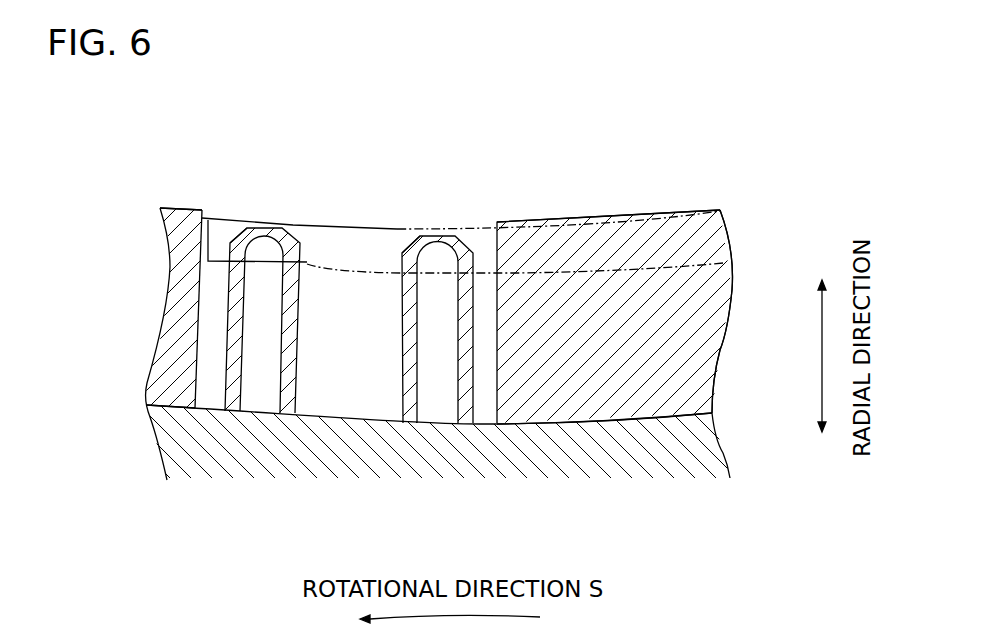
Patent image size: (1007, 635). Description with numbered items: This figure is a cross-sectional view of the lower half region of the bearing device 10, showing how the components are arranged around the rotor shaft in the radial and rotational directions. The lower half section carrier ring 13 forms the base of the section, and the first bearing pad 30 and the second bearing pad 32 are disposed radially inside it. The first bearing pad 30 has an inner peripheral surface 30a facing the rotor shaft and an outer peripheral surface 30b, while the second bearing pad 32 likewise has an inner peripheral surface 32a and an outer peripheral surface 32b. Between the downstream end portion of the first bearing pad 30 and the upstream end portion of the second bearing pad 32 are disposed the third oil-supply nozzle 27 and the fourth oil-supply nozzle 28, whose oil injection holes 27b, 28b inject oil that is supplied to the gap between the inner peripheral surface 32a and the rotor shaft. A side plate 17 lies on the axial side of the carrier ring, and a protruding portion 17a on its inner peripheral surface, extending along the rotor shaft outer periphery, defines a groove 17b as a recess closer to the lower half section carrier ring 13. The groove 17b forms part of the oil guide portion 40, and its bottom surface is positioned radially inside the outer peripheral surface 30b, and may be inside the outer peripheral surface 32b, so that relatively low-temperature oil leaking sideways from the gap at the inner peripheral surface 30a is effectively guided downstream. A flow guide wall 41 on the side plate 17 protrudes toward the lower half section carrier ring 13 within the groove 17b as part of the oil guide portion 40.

The bearing device 10 is at (768, 197).
The lower half section carrier ring 13 is at (335, 460).
The side plate 17 is at (657, 243).
The protruding portion 17a is at (693, 211).
The groove 17b is at (737, 247).
The third oil-supply nozzle 27 is at (438, 234).
The oil injection hole 27b is at (406, 235).
The fourth oil-supply nozzle 28 is at (270, 226).
The oil injection hole 28b is at (234, 228).
The first bearing pad 30 is at (593, 238).
The inner peripheral surface of the first bearing pad 30a is at (557, 221).
The outer peripheral surface of the first bearing pad 30b is at (605, 457).
The second bearing pad 32 is at (190, 207).
The inner peripheral surface of the second bearing pad 32a is at (158, 207).
The outer peripheral surface of the second bearing pad 32b is at (172, 410).
The oil guide portion 40 is at (350, 194).
The flow guide wall 41 is at (325, 220).